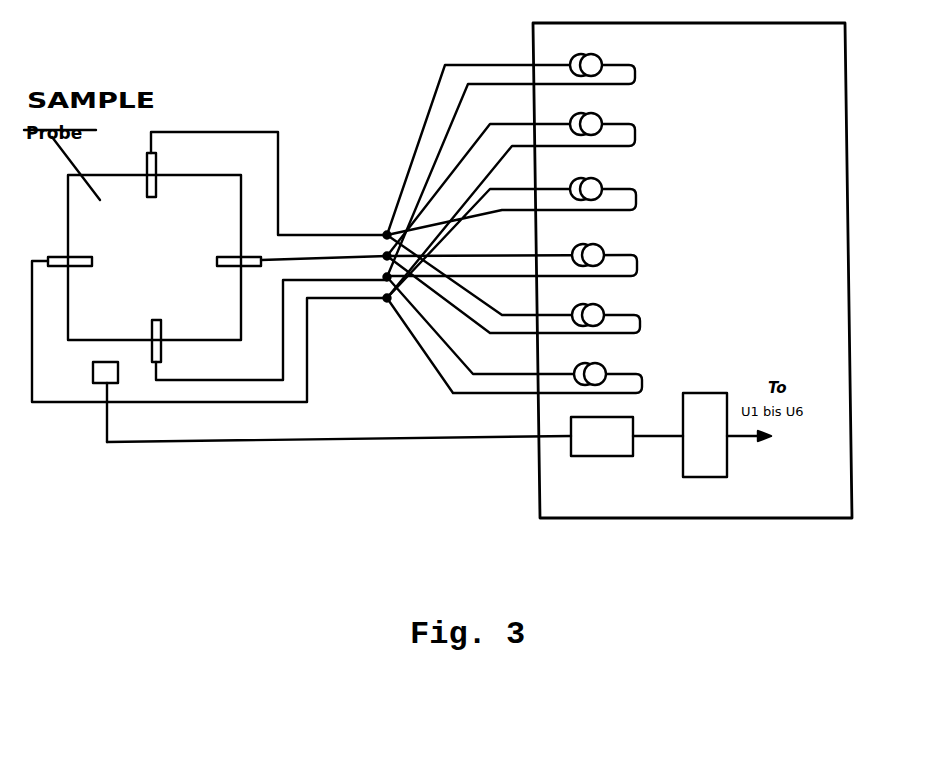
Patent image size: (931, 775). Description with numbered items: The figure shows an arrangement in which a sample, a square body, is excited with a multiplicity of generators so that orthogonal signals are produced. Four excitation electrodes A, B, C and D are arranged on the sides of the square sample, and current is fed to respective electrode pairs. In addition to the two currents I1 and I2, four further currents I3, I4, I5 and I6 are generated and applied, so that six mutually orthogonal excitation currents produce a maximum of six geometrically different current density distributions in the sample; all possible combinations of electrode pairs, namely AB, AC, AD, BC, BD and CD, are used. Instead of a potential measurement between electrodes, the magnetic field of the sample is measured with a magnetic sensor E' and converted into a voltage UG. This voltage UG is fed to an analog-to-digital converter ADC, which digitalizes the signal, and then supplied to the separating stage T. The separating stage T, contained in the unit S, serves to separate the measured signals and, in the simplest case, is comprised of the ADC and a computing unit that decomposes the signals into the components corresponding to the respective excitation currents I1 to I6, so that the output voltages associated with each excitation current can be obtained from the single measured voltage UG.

The excitation electrode A is at (267, 183).
The excitation electrode B is at (302, 248).
The excitation electrode C is at (269, 330).
The excitation electrode D is at (209, 313).
The magnetic sensor E' is at (91, 395).
The excitation current I1 is at (511, 154).
The excitation current I2 is at (511, 198).
The excitation current I3 is at (511, 230).
The excitation current I4 is at (512, 251).
The excitation current I5 is at (513, 284).
The excitation current I6 is at (514, 335).
The unit S is at (692, 270).
The analog-digital-converter ADC is at (627, 436).
The separating stage T is at (727, 435).
The voltage UG is at (339, 423).